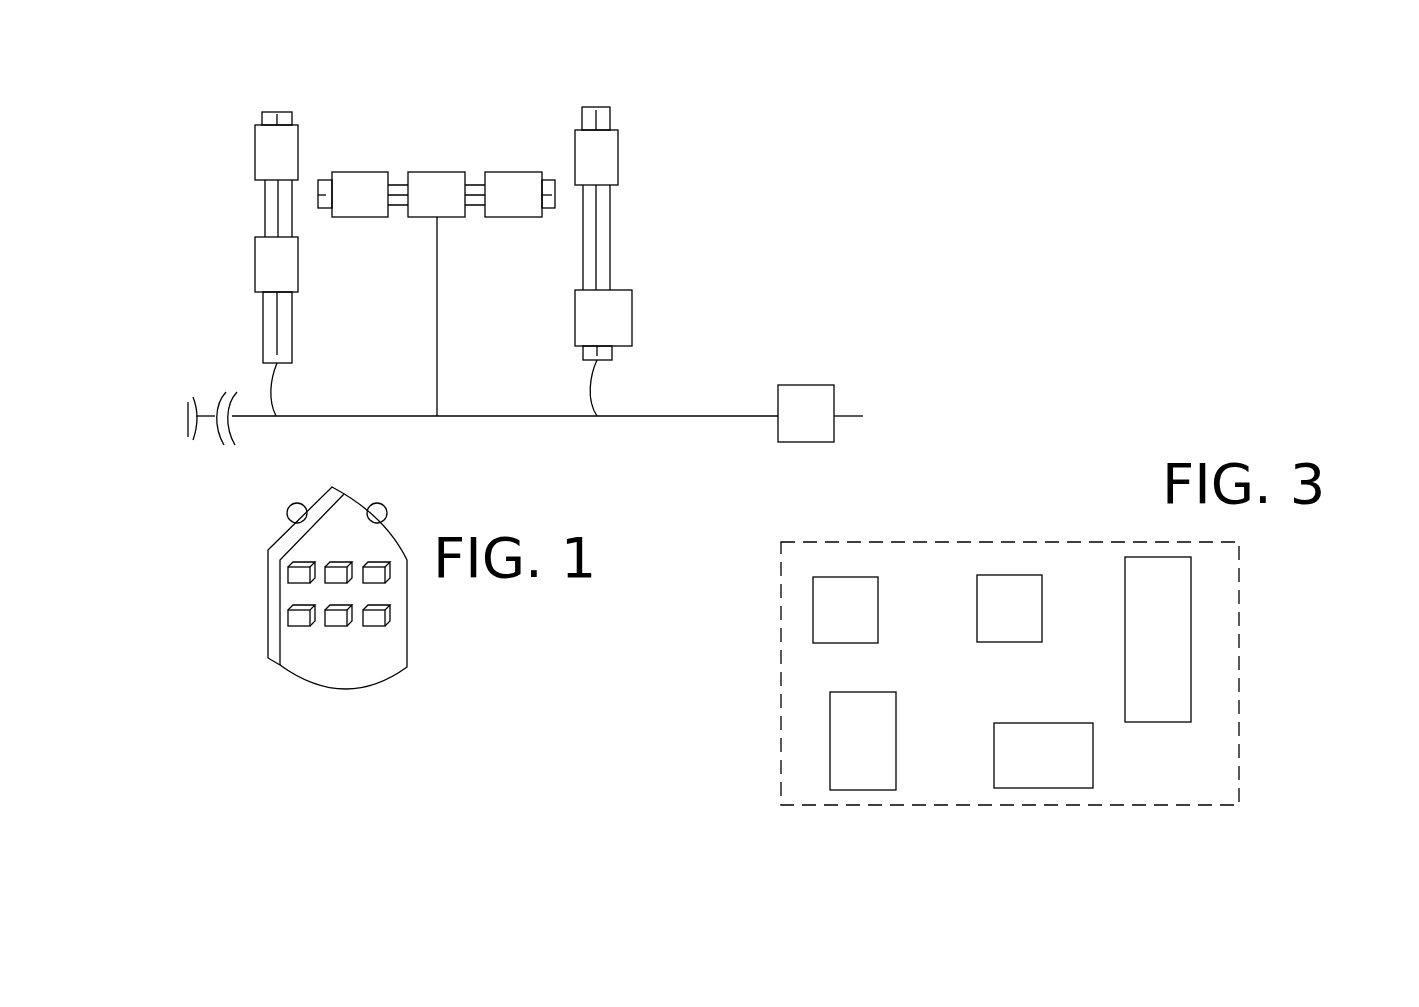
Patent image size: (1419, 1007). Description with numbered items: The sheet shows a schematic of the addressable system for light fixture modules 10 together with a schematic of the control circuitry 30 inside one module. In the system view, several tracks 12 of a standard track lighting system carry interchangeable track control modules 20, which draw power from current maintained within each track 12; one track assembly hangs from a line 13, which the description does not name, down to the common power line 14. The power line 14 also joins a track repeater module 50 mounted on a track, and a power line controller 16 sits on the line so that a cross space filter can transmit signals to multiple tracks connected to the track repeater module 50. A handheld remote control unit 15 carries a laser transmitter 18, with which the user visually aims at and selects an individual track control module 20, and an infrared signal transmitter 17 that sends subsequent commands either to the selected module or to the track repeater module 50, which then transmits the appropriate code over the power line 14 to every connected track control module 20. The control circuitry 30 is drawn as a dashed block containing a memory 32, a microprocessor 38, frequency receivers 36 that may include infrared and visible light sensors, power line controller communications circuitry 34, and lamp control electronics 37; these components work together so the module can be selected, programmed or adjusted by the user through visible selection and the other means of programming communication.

In FIG. 1, the addressable system for light fixture modules 10 is at (478, 131).
In FIG. 1, the track 12 is at (285, 337).
In FIG. 1, the support line 13 is at (437, 390).
In FIG. 1, the power line 14 is at (535, 416).
In FIG. 1, the remote control unit 15 is at (252, 640).
In FIG. 1, the power line controller 16 is at (817, 385).
In FIG. 1, the infrared (IR) signal transmitter 17 is at (385, 512).
In FIG. 1, the laser transmitter 18 is at (288, 510).
In FIG. 1, the track control module 20 is at (245, 161).
In FIG. 3, the control circuitry 30 is at (979, 522).
In FIG. 3, the memory 32 is at (822, 597).
In FIG. 3, the power line controller communications circuitry 34 is at (835, 765).
In FIG. 3, the frequency receivers 36 is at (1168, 589).
In FIG. 3, the lamp control electronics 37 is at (1027, 775).
In FIG. 3, the microprocessor 38 is at (1018, 583).
In FIG. 1, the track repeater module 50 is at (641, 325).